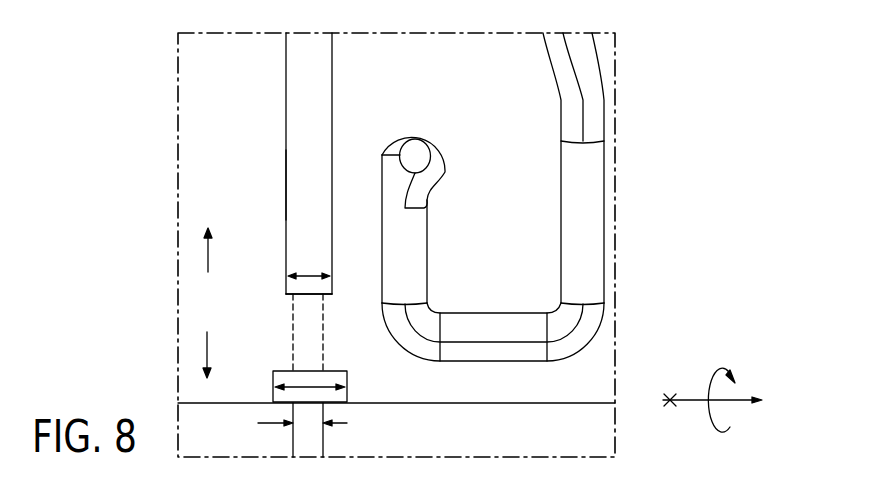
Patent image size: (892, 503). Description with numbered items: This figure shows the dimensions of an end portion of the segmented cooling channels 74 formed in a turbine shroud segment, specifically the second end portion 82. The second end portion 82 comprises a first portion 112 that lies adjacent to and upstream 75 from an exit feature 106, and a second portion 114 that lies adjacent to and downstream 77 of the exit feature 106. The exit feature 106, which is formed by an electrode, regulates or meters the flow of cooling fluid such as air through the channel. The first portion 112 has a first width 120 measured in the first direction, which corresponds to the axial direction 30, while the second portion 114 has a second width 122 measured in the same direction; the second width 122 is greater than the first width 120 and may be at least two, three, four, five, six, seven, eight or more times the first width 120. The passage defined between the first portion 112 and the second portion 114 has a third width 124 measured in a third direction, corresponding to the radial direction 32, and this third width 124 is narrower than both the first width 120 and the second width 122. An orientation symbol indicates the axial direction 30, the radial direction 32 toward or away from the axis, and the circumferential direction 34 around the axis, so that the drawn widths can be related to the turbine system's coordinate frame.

The second end portion 82 is at (319, 147).
The first portion 112 is at (286, 184).
The first width 120 is at (312, 272).
The segmented cooling channels 74 is at (323, 322).
The upstream direction 75 is at (209, 262).
The downstream direction 77 is at (208, 340).
The exit feature 106 is at (276, 327).
The second width 122 is at (310, 387).
The second portion 114 is at (272, 378).
The third width 124 is at (347, 423).
The axial direction 30 is at (735, 405).
The radial direction 32 is at (665, 404).
The circumferential direction 34 is at (706, 372).